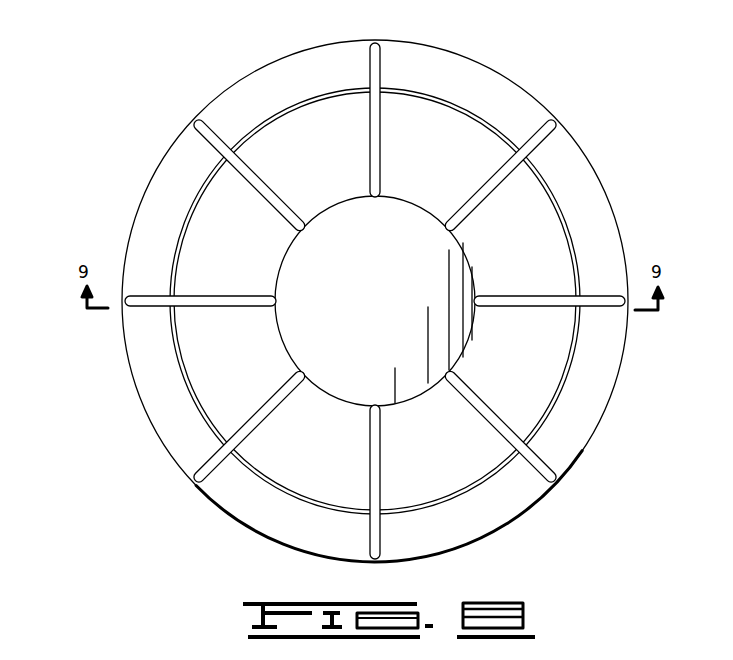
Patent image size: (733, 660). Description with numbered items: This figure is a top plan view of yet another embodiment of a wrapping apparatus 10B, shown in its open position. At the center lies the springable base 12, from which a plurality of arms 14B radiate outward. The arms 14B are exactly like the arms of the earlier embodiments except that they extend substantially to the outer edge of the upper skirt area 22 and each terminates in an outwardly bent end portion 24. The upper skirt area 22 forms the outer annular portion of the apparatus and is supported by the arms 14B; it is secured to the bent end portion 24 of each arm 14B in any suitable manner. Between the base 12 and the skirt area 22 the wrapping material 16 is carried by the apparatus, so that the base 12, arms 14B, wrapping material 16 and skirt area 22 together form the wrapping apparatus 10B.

The wrapping apparatus 10B is at (343, 285).
The springable base 12 is at (422, 272).
The arms 14B is at (370, 110).
The wrapping material 16 is at (447, 163).
The upper skirt area 22 is at (465, 80).
The outwardly bent end portion 24 is at (390, 37).